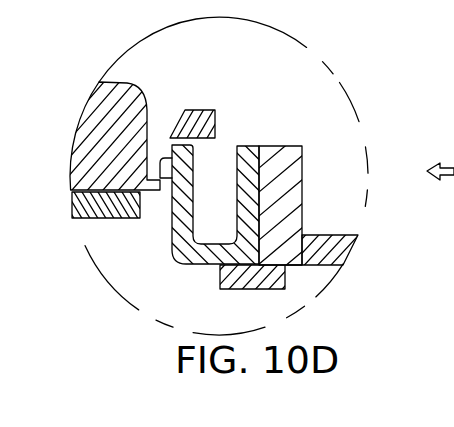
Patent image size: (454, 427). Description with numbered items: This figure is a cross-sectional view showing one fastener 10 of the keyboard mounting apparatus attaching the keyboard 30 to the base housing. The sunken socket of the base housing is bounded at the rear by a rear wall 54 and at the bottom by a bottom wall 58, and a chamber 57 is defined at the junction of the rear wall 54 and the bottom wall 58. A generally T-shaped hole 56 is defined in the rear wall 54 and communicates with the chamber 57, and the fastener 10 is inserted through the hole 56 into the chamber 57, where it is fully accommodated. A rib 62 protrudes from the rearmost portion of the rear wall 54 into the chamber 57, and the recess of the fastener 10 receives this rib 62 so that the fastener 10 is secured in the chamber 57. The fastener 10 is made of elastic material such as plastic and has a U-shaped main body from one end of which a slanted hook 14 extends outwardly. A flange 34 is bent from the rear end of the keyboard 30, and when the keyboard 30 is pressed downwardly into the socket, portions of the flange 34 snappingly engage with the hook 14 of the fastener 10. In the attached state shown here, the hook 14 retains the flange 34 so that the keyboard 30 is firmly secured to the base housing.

The fastener 10 is at (328, 261).
The slanted hook 14 is at (172, 145).
The keyboard 30 is at (110, 107).
The flange 34 is at (160, 160).
The rear wall 54 is at (200, 110).
The T-shaped hole 56 is at (232, 125).
The chamber 57 is at (203, 252).
The bottom wall 58 is at (90, 220).
The rib 62 is at (264, 180).